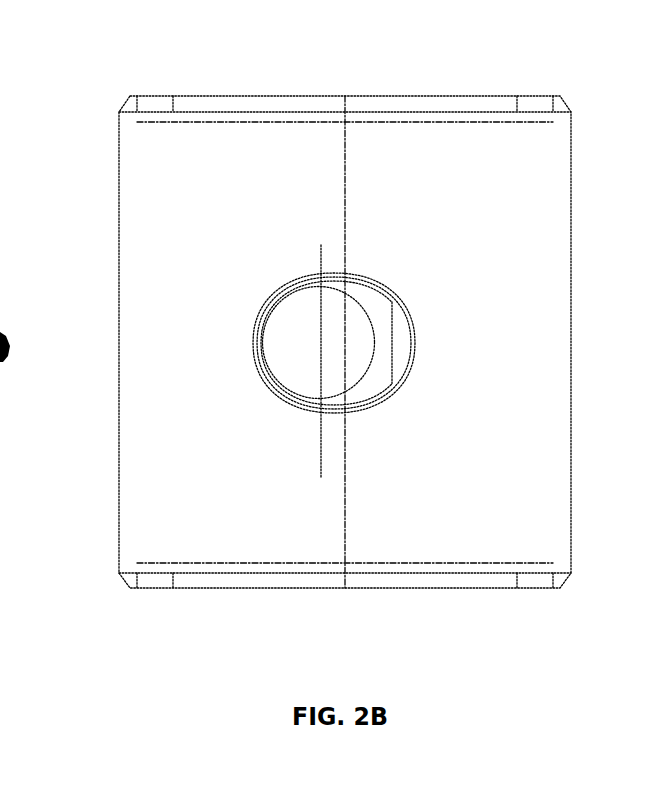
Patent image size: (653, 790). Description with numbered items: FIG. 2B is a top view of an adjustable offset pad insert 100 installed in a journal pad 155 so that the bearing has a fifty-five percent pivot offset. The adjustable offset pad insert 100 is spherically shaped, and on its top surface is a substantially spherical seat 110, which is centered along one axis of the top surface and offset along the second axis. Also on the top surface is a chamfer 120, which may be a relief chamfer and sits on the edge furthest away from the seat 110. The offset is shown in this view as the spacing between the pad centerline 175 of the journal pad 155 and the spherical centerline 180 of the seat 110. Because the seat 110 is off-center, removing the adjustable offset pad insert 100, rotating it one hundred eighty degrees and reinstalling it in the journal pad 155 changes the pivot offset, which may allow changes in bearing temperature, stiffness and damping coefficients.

The adjustable offset pad insert 100 is at (278, 287).
The seat 110 is at (286, 328).
The chamfer 120 is at (399, 340).
The journal pad 155 is at (160, 488).
The pad centerline 175 is at (345, 452).
The spherical centerline 180 is at (324, 428).